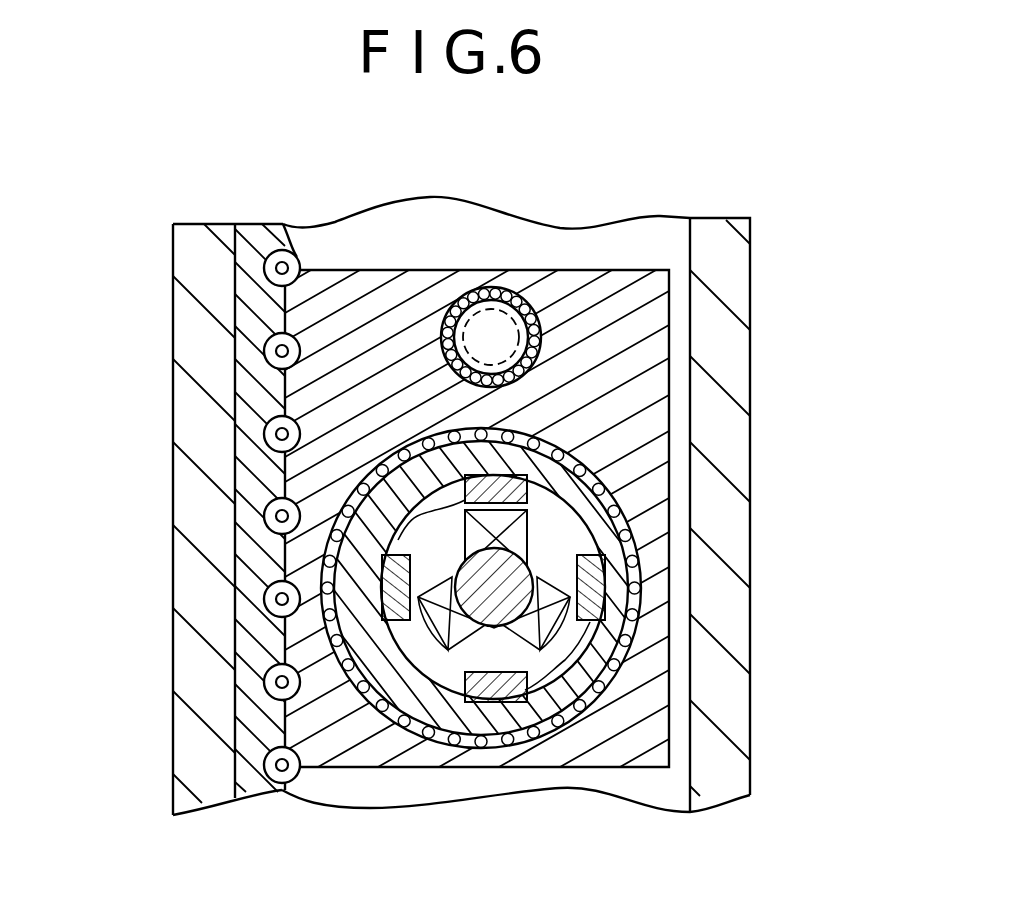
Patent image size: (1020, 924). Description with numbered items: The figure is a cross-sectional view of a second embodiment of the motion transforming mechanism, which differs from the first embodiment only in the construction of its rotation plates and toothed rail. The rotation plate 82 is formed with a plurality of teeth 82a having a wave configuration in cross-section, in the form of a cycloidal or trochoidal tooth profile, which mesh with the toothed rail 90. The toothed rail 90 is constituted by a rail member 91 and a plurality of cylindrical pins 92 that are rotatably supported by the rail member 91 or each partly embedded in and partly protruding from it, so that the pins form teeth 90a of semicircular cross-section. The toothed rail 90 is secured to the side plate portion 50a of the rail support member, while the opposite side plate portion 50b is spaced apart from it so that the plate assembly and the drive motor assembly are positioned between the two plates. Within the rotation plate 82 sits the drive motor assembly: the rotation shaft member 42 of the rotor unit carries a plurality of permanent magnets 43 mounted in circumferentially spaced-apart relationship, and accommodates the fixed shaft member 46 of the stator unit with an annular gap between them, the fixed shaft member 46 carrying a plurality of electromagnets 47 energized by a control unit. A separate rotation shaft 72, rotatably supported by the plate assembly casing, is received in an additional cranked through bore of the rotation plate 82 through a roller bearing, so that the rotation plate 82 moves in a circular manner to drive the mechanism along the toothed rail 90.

The rotation shaft member 42 is at (458, 750).
The permanent magnets 43 is at (405, 524).
The fixed shaft member 46 is at (532, 566).
The electromagnets 47 is at (456, 548).
The side plate portion 50a is at (190, 748).
The side plate portion 50b is at (726, 702).
The rotation shaft 72 is at (499, 300).
The rotation plate 82 is at (668, 348).
The teeth 82a is at (285, 630).
The toothed rail 90 is at (222, 523).
The teeth 90a is at (297, 257).
The rail member 91 is at (247, 443).
The cylindrical pins 92 is at (262, 352).